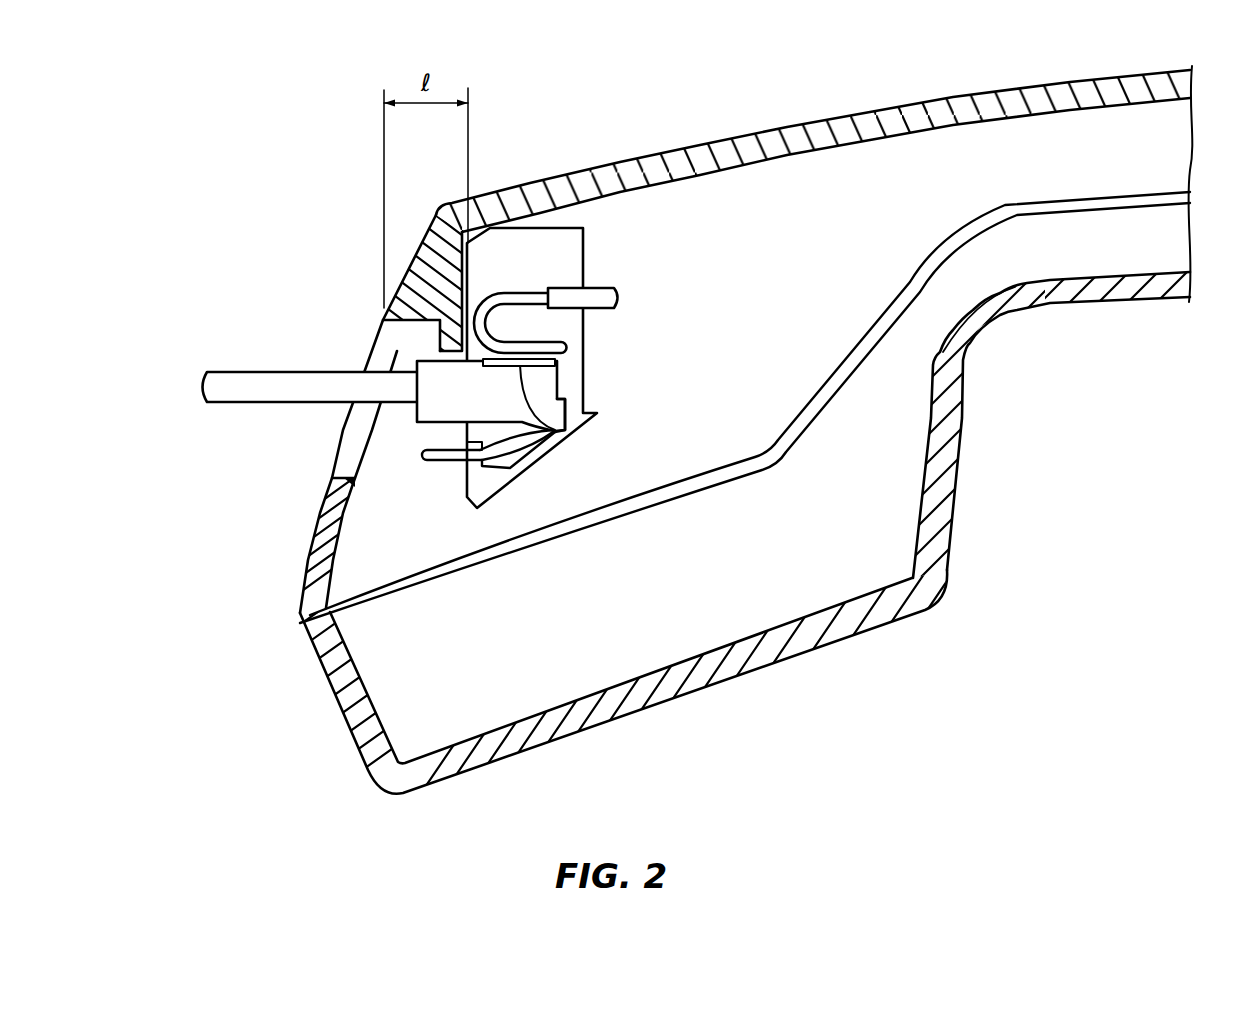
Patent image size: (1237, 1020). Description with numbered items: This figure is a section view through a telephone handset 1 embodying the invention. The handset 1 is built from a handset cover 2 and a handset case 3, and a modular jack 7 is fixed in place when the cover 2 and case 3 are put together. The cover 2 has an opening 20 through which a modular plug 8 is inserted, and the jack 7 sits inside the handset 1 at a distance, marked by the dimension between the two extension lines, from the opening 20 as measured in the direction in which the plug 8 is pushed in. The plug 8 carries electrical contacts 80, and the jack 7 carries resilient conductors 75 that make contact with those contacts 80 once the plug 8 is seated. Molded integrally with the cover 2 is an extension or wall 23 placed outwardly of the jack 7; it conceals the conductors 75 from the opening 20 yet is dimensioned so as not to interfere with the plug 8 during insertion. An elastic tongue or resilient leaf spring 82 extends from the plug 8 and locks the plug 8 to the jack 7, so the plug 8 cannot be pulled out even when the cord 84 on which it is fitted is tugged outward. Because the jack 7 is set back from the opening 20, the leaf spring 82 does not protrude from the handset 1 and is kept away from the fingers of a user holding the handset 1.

The telephone handset 1 is at (967, 92).
The handset cover 2 is at (780, 127).
The handset case 3 is at (948, 551).
The modular jack 7 is at (585, 260).
The modular plug 8 is at (558, 396).
The opening 20 is at (337, 457).
The wall 23 is at (438, 335).
The resilient conductors 75 is at (519, 292).
The electrical contacts 80 is at (558, 435).
The resilient leaf spring 82 is at (450, 461).
The cord 84 is at (263, 402).